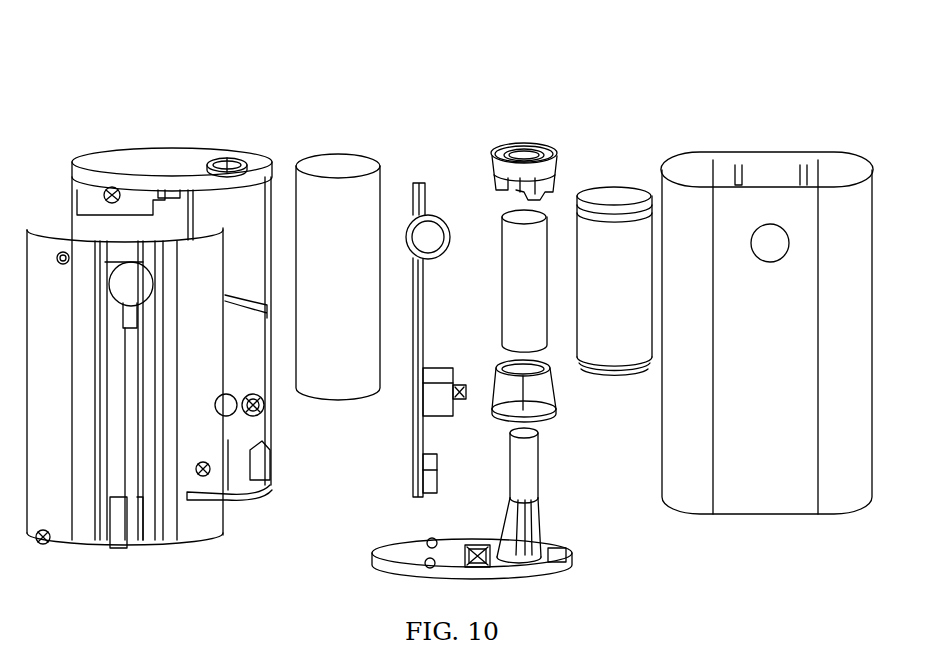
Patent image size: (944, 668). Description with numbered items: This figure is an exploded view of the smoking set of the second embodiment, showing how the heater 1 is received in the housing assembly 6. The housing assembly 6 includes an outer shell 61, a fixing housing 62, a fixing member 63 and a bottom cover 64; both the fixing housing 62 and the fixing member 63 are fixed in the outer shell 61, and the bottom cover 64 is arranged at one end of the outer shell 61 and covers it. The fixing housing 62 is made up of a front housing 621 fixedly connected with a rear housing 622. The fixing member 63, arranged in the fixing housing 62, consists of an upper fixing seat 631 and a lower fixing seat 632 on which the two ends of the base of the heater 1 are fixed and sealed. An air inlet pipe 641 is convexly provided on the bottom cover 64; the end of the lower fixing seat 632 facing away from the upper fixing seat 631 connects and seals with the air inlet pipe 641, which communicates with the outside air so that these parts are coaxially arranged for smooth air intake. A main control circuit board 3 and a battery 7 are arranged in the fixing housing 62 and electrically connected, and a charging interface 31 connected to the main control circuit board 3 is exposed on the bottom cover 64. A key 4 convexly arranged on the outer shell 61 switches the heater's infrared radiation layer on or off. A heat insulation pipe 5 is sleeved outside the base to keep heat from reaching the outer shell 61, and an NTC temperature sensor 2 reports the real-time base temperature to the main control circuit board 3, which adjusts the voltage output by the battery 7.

The housing assembly 6 is at (638, 53).
The outer shell 61 is at (727, 147).
The fixing housing 62 is at (142, 95).
The front housing 621 is at (46, 240).
The rear housing 622 is at (146, 168).
The fixing member 63 is at (543, 95).
The upper fixing seat 631 is at (539, 141).
The lower fixing seat 632 is at (492, 361).
The bottom cover 64 is at (372, 578).
The air inlet pipe 641 is at (537, 469).
The battery 7 is at (344, 362).
The key 4 is at (422, 240).
The main control circuit board 3 is at (412, 432).
The charging interface 31 is at (441, 472).
The heater 1 is at (550, 222).
The NTC temperature sensor 2 is at (497, 270).
The heat insulation pipe 5 is at (633, 349).